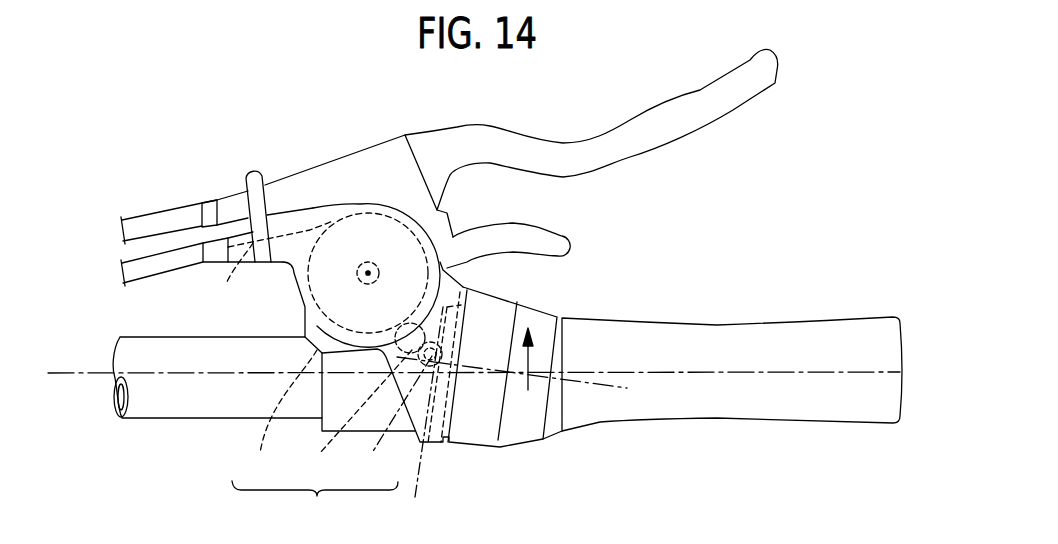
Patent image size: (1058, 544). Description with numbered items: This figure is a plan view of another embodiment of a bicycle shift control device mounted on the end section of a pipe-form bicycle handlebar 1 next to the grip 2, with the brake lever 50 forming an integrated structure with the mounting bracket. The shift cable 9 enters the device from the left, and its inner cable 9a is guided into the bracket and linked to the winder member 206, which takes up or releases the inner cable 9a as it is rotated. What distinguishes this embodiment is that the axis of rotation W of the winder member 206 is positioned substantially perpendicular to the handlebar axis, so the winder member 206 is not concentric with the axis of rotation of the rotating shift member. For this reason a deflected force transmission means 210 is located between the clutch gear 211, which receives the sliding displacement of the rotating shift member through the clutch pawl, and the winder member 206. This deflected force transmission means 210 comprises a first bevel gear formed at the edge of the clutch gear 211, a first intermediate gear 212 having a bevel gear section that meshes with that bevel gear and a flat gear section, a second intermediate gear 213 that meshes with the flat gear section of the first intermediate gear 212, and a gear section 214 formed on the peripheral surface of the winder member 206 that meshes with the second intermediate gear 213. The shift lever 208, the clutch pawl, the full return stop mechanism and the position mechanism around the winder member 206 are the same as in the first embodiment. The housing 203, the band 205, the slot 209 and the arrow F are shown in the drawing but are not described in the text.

The bicycle handlebar 1 is at (210, 403).
The grip 2 is at (720, 323).
The shift cable 9 is at (160, 262).
The inner cable 9a is at (272, 265).
The brake lever 50 is at (630, 122).
The housing 203 is at (367, 198).
The clamp band 205 is at (510, 427).
The winder member 206 is at (300, 302).
The shift lever 208 is at (503, 232).
The slot 209 is at (448, 447).
The deflected force transmission means 210 is at (315, 504).
The clutch gear / first bevel gear 211 is at (420, 416).
The first intermediate gear 212 is at (391, 420).
The second intermediate gear 213 is at (354, 417).
The gear section 214 is at (278, 417).
The axis of rotation of the winder member W is at (367, 270).
The force direction F is at (537, 355).